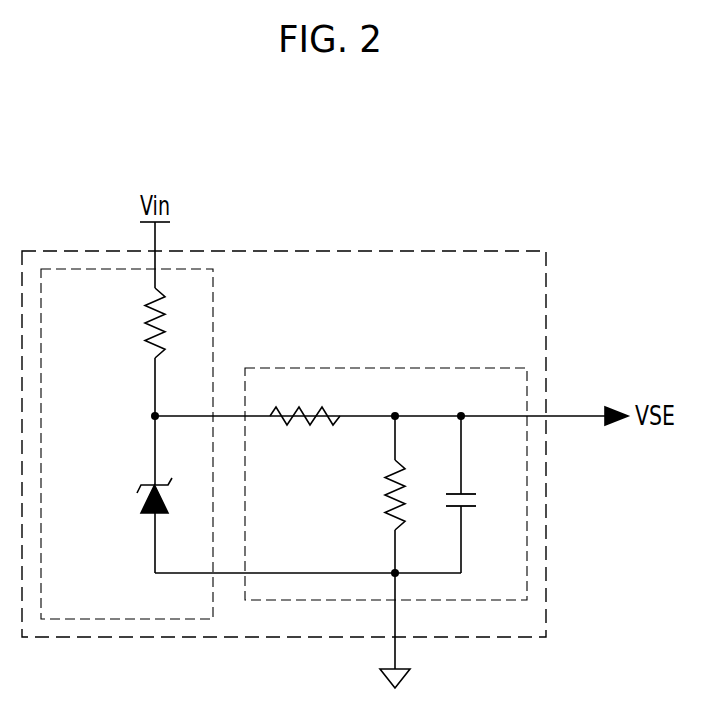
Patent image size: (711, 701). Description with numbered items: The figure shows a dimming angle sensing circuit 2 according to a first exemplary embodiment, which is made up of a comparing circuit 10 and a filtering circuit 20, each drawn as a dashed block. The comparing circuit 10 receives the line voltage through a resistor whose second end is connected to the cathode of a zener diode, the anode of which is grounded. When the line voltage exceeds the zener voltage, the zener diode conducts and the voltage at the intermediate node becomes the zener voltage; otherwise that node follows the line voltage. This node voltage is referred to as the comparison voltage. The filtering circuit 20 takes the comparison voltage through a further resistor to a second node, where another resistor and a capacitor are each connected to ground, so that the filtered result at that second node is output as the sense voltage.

The dimming angle sensing circuit 2 is at (546, 280).
The comparing circuit 10 is at (213, 302).
The filtering circuit 20 is at (437, 367).